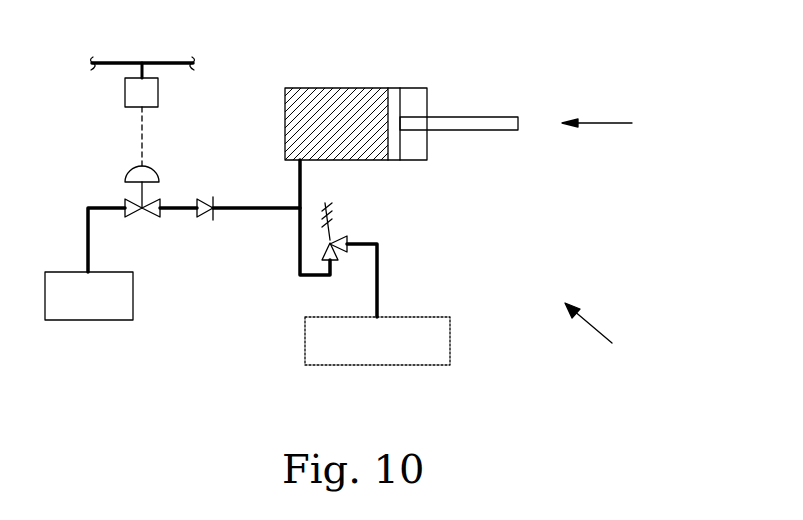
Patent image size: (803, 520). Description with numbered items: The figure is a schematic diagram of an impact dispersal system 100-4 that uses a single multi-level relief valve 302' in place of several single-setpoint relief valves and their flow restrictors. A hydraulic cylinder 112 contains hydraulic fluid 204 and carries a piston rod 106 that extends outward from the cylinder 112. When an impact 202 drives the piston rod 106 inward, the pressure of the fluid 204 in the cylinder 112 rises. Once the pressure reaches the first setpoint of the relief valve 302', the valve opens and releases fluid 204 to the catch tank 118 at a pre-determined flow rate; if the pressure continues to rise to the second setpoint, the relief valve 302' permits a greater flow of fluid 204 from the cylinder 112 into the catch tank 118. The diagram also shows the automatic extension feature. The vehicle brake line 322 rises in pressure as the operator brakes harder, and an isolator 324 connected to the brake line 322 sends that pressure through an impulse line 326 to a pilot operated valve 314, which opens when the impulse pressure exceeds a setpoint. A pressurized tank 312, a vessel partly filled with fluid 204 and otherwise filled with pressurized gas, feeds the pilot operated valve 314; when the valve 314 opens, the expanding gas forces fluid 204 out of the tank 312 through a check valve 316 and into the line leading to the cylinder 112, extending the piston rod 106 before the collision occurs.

The brake line 322 is at (116, 62).
The isolator 324 is at (124, 88).
The impulse line 326 is at (136, 118).
The pilot operated valve 314 is at (145, 219).
The check valve 316 is at (205, 199).
The pressurized tank 312 is at (111, 321).
The hydraulic cylinder 112 is at (358, 88).
The hydraulic fluid 204 is at (362, 128).
The piston rod 106 is at (462, 117).
The impact 202 is at (596, 122).
The multi-level relief valve 302' is at (351, 219).
The catch tank 118 is at (418, 365).
The impact dispersal system 100-4 is at (617, 335).